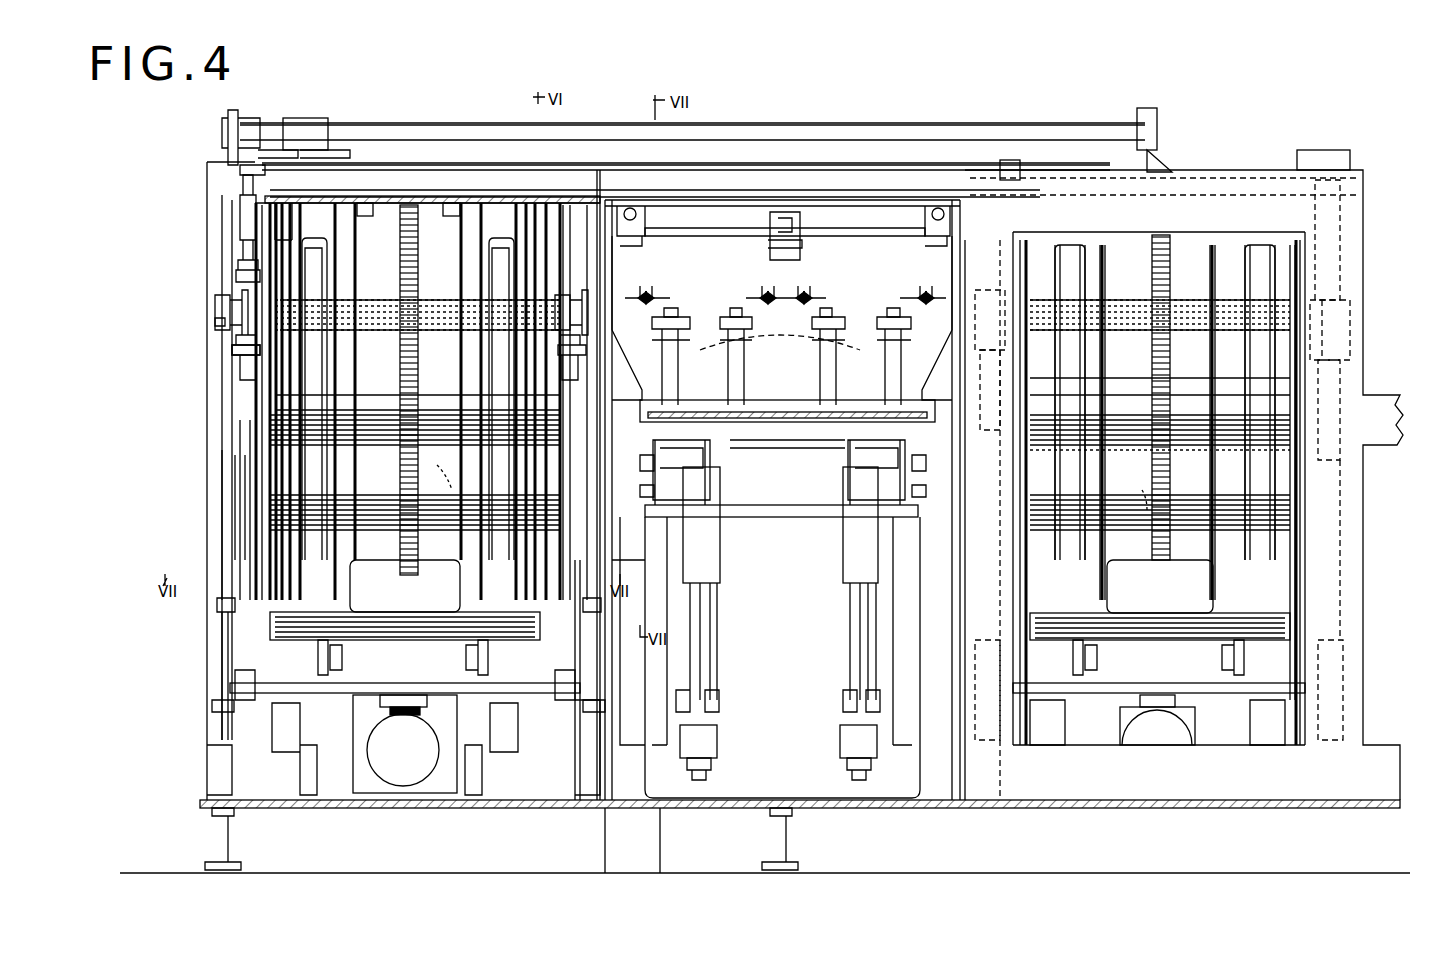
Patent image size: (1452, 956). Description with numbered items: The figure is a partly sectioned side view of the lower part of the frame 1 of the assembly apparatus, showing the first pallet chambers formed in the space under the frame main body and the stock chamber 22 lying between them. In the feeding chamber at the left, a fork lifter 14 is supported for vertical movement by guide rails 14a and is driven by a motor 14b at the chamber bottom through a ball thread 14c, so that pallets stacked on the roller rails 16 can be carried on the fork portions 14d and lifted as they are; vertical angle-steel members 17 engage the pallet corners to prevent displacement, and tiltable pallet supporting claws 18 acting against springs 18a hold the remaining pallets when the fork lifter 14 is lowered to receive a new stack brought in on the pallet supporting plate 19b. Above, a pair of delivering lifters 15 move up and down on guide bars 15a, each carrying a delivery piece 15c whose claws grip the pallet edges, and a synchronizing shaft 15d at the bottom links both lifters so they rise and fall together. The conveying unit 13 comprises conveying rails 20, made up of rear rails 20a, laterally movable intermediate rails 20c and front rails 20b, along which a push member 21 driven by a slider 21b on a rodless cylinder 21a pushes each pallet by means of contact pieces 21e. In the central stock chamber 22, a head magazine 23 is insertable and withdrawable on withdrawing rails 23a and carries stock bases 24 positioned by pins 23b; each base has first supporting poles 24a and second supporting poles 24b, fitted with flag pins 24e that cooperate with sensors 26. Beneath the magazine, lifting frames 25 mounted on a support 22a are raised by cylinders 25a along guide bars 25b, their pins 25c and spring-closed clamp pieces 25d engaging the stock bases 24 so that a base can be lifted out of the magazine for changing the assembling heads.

The frame 1 is at (1350, 470).
The conveying unit 13 is at (285, 115).
The fork lifter 14 is at (350, 583).
The guide rails 14a is at (314, 267).
The motor 14b is at (395, 748).
The ball thread 14c is at (418, 262).
The fork portions 14d is at (308, 743).
The delivering lifters 15 is at (215, 300).
The guide bars 15a is at (240, 520).
The delivery piece 15c is at (299, 327).
The synchronizing shaft 15d is at (470, 693).
The rails with rollers 16 is at (781, 658).
The members made of angle steel 17 is at (288, 483).
The pallet supporting claws 18 is at (288, 462).
The springs 18a is at (235, 465).
The pallet supporting plate 19b is at (385, 640).
The conveying rails 20 is at (690, 177).
The rear rails 20a is at (462, 188).
The front rails 20b is at (970, 212).
The intermediate rails 20c is at (822, 199).
The push member 21 is at (255, 120).
The rodless cylinder 21a is at (600, 140).
The slider 21b is at (310, 122).
The contact pieces 21e is at (240, 168).
The stock chamber 22 is at (865, 240).
The support 22a is at (752, 562).
The head magazine 23 is at (810, 360).
The withdrawing rails 23a is at (650, 296).
The pins 23b is at (820, 370).
The stock bases 24 is at (833, 402).
The first supporting poles 24a is at (730, 315).
The second supporting poles 24b is at (672, 310).
The flag pins 24e is at (642, 296).
The lifting frames 25 is at (720, 455).
The cylinders 25a is at (713, 660).
The guide bars 25b is at (706, 717).
The pins 25c is at (850, 423).
The clamp pieces 25d is at (680, 445).
The sensors 26 is at (640, 296).